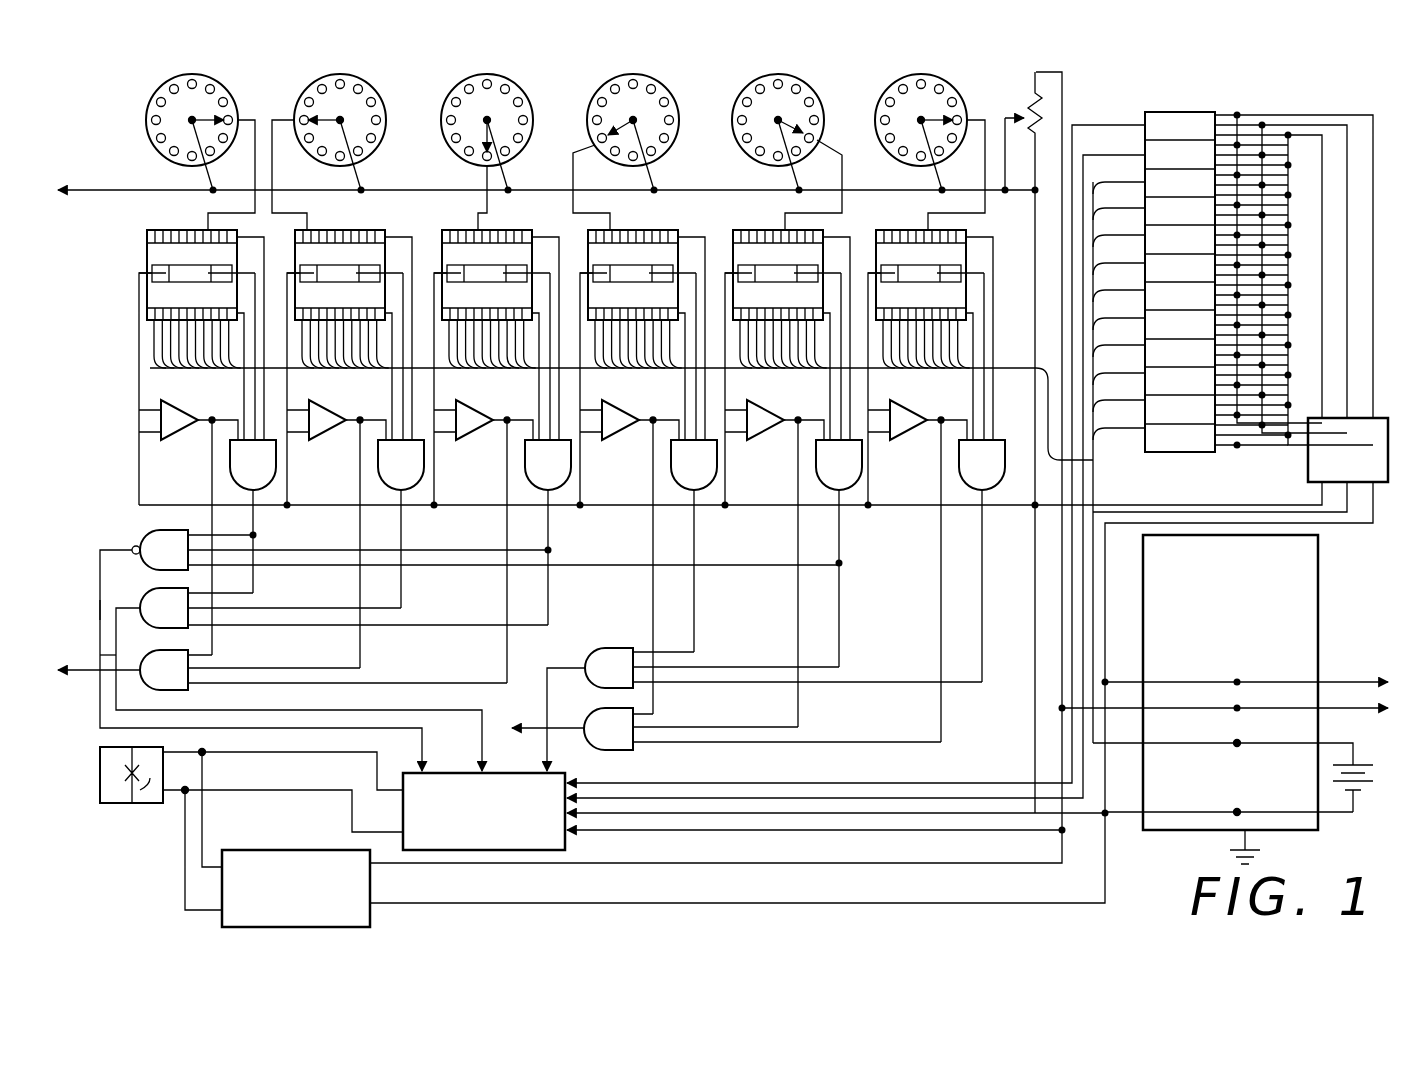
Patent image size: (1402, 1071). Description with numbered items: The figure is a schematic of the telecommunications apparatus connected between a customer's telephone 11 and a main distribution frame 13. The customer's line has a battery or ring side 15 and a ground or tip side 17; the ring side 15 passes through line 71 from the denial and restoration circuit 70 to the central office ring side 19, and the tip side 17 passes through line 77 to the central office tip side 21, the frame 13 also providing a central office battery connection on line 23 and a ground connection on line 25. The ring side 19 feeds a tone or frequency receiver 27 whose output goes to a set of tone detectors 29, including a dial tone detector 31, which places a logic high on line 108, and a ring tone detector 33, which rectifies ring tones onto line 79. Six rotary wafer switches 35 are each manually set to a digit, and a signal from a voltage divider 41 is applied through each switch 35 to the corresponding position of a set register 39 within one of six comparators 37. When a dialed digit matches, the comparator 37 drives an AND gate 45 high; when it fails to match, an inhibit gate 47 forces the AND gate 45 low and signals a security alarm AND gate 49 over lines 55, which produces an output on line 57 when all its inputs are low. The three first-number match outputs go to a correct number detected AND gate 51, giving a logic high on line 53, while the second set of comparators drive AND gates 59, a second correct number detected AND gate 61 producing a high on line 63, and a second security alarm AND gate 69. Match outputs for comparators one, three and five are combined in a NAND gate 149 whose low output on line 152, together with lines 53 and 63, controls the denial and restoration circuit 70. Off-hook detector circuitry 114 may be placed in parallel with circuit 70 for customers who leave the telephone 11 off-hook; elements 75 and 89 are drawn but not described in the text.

The customer's telephone 11 is at (100, 772).
The main distribution frame 13 is at (1310, 580).
The ring side 15 is at (288, 762).
The tip side 17 is at (253, 790).
The ring side of the central office equipment 19 is at (1356, 684).
The central office equipment tip side 21 is at (1348, 712).
The central office battery connection line 23 is at (1310, 746).
The central office ground connection line 25 is at (1332, 805).
The tone or frequency receiver 27 is at (1240, 465).
The tone detectors 29 is at (1192, 454).
The dial tone detector 31 is at (1182, 150).
The ring tone detector 33 is at (1160, 122).
The rotary wafer switch 35 is at (213, 100).
The comparator 37 is at (160, 250).
The set register 39 is at (168, 230).
The voltage divider 41 is at (1026, 98).
The AND gate 45 is at (234, 468).
The inhibit gate 47 is at (172, 418).
The security alarm AND gate 49 is at (160, 662).
The correct number detected AND gate 51 is at (158, 600).
The line 53 is at (100, 655).
The lines 55 is at (200, 420).
The line 57 is at (88, 672).
The AND gate 59 is at (675, 468).
The second correct number detected AND gate 61 is at (612, 655).
The line 63 is at (547, 690).
The security alarm AND gate 69 is at (608, 728).
The denial and restoration circuit 70 is at (560, 782).
The line 71 is at (733, 814).
The hook switch 75 is at (140, 790).
The line 77 is at (858, 830).
The line 79 is at (1076, 124).
The line 89 is at (1124, 820).
The line 108 is at (1082, 482).
The off-hook detector circuitry 114 is at (288, 850).
The NAND gate 149 is at (145, 540).
The line 152 is at (100, 580).